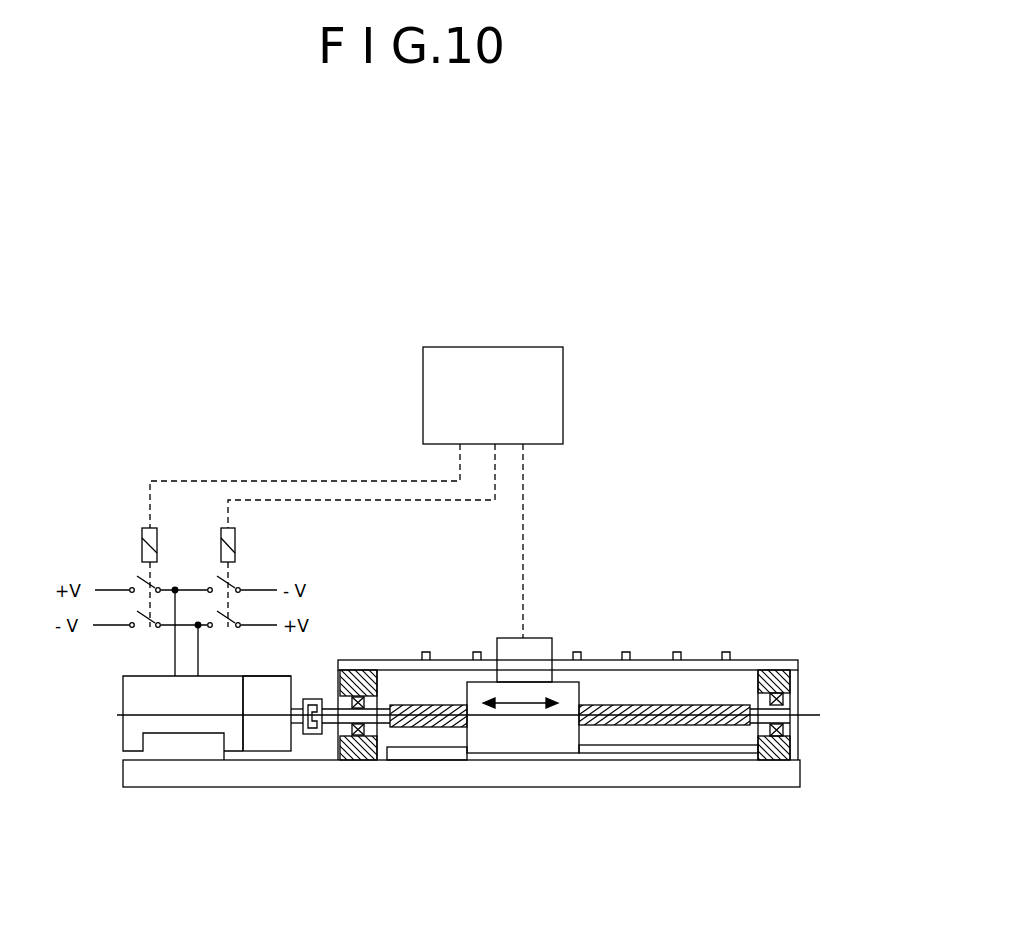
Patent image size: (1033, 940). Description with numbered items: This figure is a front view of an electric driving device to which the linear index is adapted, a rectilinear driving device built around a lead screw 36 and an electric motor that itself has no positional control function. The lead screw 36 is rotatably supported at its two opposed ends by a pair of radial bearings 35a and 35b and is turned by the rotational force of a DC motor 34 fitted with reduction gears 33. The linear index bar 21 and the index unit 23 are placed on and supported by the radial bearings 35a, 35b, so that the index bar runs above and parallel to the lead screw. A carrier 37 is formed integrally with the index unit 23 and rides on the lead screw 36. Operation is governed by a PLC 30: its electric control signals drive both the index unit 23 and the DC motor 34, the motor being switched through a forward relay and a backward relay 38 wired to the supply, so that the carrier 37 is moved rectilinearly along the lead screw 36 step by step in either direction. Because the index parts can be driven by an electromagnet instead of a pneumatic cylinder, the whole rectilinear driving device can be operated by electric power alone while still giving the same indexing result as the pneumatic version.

The PLC 30 is at (553, 378).
The relay 38 is at (131, 553).
The DC motor 34 is at (183, 702).
The reduction gears 33 is at (260, 729).
The radial bearing 35a is at (340, 683).
The radial bearing 35b is at (783, 667).
The linear index bar 21 is at (652, 665).
The lead screw 36 is at (687, 703).
The carrier 37 is at (555, 737).
The index unit 23 is at (515, 657).